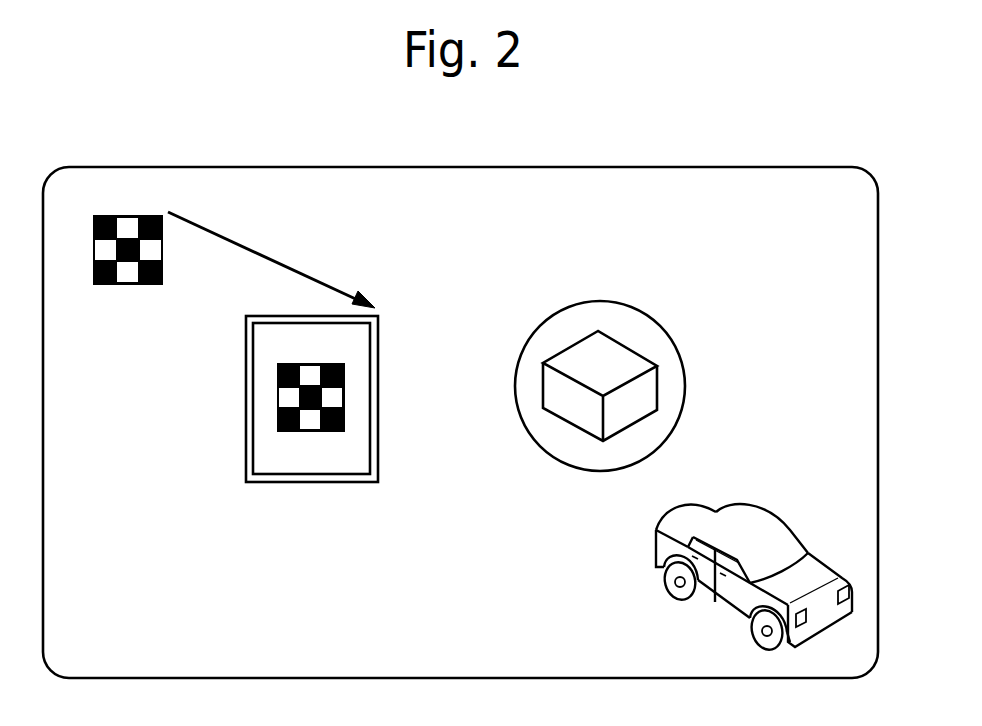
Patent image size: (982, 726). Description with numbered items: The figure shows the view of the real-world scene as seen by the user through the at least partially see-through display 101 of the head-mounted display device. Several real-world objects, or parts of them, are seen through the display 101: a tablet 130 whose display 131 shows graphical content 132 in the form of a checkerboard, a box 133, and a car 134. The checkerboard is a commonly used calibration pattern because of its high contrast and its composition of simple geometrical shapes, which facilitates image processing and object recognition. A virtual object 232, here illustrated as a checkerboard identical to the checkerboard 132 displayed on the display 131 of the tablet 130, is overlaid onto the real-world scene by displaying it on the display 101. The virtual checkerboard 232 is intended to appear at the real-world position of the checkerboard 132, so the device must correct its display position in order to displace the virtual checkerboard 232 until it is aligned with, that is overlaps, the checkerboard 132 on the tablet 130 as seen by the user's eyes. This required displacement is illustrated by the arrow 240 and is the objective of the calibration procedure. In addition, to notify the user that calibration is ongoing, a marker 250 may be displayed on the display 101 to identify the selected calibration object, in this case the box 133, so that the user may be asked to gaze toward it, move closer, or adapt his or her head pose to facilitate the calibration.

The display 101 is at (799, 167).
The virtual object 232 is at (117, 215).
The arrow 240 is at (277, 261).
The tablet 130 is at (246, 332).
The display of tablet 131 is at (258, 386).
The graphical content 132 is at (278, 418).
The marker 250 is at (597, 302).
The box 133 is at (640, 353).
The car 134 is at (656, 540).